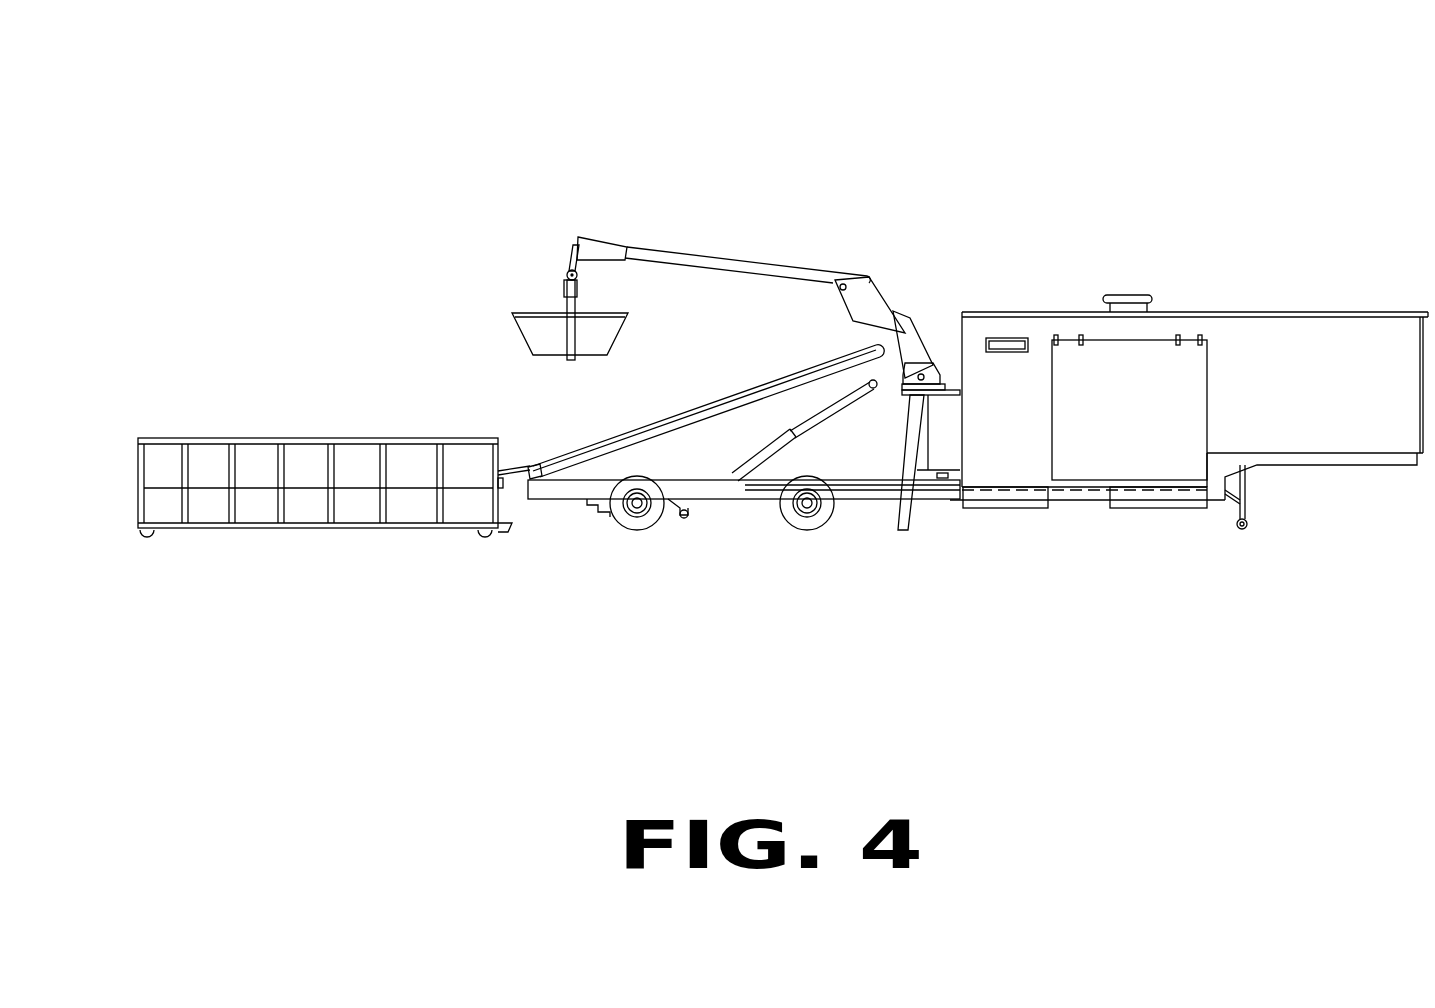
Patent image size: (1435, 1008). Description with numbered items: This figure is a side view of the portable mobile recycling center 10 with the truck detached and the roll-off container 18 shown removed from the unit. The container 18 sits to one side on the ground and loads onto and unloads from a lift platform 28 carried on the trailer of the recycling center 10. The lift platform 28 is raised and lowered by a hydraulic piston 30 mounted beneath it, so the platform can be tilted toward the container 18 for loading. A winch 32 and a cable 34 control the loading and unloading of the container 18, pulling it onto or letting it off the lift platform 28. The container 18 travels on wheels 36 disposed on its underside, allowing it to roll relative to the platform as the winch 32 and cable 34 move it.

The portable mobile recycling center 10 is at (1210, 158).
The roll-off container 18 is at (317, 440).
The lift platform 28 is at (768, 404).
The hydraulic piston 30 is at (812, 425).
The winch 32 is at (877, 348).
The cable 34 is at (694, 410).
The wheels 36 is at (148, 540).